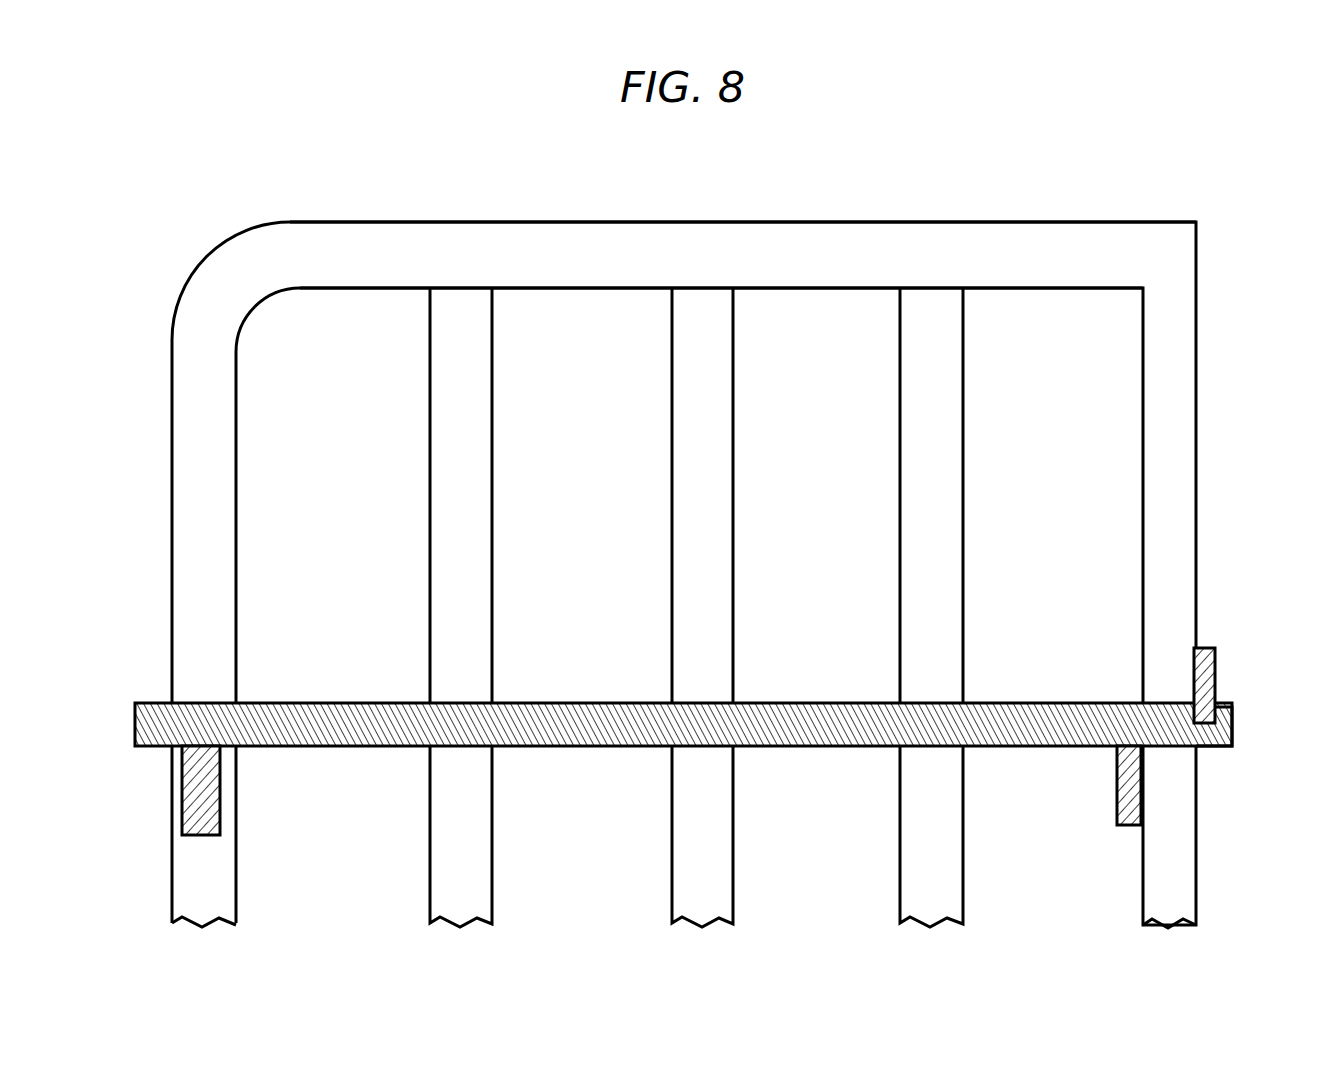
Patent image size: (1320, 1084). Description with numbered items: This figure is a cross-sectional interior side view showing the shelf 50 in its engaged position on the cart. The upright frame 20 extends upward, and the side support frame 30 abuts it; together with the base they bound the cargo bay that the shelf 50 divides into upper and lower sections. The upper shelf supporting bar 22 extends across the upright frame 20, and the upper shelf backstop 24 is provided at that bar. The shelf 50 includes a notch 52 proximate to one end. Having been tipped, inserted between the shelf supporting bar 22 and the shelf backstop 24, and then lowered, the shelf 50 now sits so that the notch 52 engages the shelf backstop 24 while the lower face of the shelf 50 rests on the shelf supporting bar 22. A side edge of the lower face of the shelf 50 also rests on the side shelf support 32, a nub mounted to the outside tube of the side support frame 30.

The upright frame 20 is at (1197, 320).
The side support frame 30 is at (717, 222).
The shelf 50 is at (305, 703).
The notch 52 is at (1218, 716).
The upper shelf backstop 24 is at (1216, 680).
The upper shelf supporting bar 22 is at (1117, 790).
The side shelf support 32 is at (182, 793).